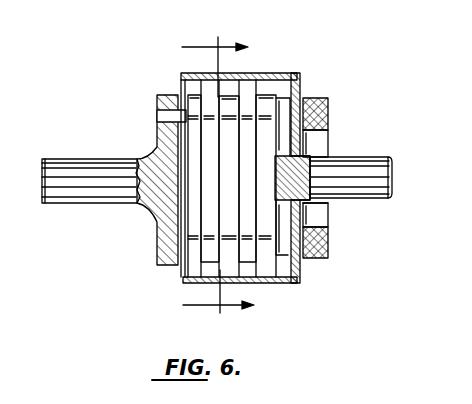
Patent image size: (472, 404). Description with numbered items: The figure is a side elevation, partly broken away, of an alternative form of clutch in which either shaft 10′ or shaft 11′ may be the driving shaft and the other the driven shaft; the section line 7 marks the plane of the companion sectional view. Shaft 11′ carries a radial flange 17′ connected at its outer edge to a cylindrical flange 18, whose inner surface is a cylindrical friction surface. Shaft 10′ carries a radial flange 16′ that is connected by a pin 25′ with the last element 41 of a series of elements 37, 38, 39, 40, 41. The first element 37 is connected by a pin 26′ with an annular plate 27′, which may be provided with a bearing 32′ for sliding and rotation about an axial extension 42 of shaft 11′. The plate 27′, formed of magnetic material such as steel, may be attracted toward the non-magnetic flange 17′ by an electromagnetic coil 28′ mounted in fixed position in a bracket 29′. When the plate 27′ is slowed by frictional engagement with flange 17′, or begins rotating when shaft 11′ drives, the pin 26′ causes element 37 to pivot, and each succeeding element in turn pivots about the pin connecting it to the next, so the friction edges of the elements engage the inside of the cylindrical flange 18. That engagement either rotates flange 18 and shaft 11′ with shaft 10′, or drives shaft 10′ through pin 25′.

The section line 7- 7 is at (218, 182).
The shaft 10′ is at (76, 160).
The shaft 11′ is at (386, 160).
The radial flange 16′ is at (162, 147).
The radial flange 17′ is at (300, 86).
The cylindrical flange 18 is at (203, 77).
The pin 25′ is at (160, 116).
The pin 26′ is at (277, 240).
The annular plate 27′ is at (330, 228).
The electromagnetic coil 28′ is at (316, 103).
The bracket 29′ is at (330, 117).
The bearing 32′ is at (322, 200).
The first element 37 is at (268, 100).
The element 38 is at (245, 215).
The element 39 is at (223, 145).
The element 40 is at (209, 150).
The last element 41 is at (187, 130).
The axial extension 42 is at (275, 168).